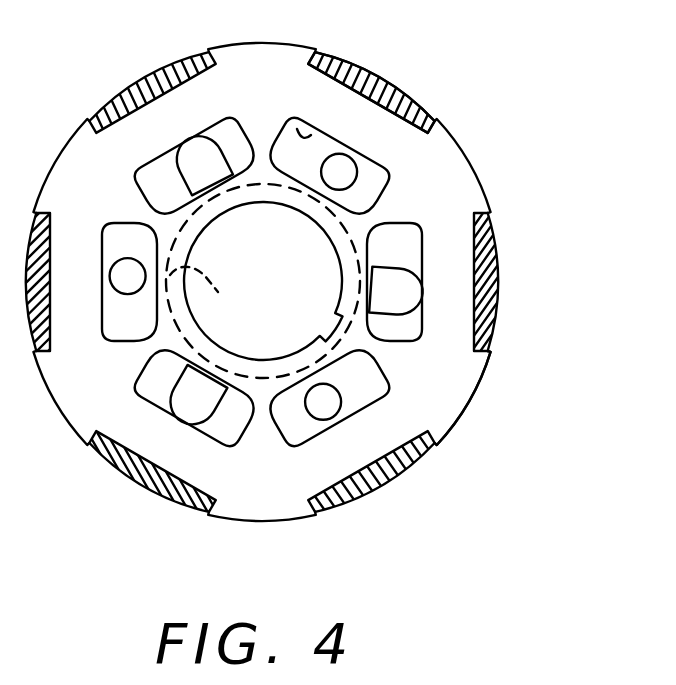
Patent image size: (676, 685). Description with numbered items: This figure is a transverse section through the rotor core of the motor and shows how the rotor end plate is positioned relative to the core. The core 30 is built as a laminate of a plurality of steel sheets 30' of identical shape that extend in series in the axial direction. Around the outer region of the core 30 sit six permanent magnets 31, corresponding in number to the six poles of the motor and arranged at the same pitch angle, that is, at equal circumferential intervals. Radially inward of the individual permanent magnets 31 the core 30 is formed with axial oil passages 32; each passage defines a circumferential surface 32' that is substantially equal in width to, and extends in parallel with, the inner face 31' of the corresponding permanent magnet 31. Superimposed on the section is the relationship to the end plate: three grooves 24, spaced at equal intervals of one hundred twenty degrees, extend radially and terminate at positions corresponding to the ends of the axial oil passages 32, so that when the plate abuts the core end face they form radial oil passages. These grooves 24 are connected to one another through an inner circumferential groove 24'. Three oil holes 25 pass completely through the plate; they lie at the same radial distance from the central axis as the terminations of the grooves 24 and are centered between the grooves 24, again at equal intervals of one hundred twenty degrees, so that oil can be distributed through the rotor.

The core 30 is at (293, 282).
The steel sheets 30' is at (492, 397).
The permanent magnets 31 is at (309, 325).
The inner faces of the permanent magnets 31' is at (374, 114).
The axial oil passages 32 is at (263, 261).
The circumferential surfaces 32' is at (266, 103).
The grooves 24 is at (293, 307).
The inner circumferential groove 24' is at (263, 281).
The oil holes 25 is at (323, 402).